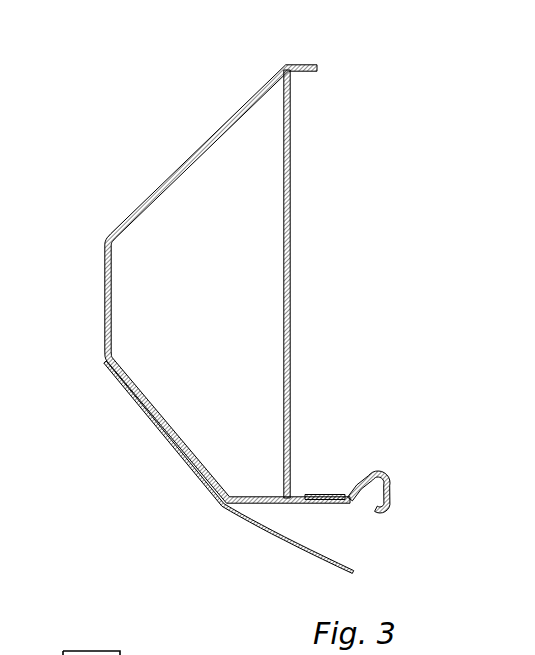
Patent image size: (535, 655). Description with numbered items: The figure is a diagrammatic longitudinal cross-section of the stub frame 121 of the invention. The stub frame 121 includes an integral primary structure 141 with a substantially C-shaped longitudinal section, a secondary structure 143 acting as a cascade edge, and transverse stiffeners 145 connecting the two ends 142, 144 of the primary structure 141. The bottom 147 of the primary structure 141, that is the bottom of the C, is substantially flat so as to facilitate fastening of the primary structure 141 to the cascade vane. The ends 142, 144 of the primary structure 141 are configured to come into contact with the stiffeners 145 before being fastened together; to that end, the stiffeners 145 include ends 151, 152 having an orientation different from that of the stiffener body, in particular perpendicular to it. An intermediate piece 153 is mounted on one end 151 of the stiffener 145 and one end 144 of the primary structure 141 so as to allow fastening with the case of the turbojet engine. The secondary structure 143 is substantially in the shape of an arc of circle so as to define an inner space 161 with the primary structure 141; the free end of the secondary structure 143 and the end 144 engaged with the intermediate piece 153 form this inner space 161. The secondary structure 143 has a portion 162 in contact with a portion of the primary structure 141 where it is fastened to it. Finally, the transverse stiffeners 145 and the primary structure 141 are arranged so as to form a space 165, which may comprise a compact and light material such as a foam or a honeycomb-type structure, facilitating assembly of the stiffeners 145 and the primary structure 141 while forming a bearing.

The stub frame 121 is at (124, 180).
The primary structure 141 is at (200, 139).
The end of the primary structure 142 is at (288, 65).
The secondary structure 143 is at (222, 509).
The end of the primary structure 144 is at (292, 508).
The transverse stiffeners 145 is at (291, 301).
The bottom of the primary structure 147 is at (105, 305).
The end of the stiffener 151 is at (296, 497).
The end of the stiffener 152 is at (312, 73).
The intermediate piece 153 is at (378, 475).
The inner space 161 is at (312, 546).
The portion of the secondary structure 162 is at (140, 417).
The space 165 is at (240, 380).